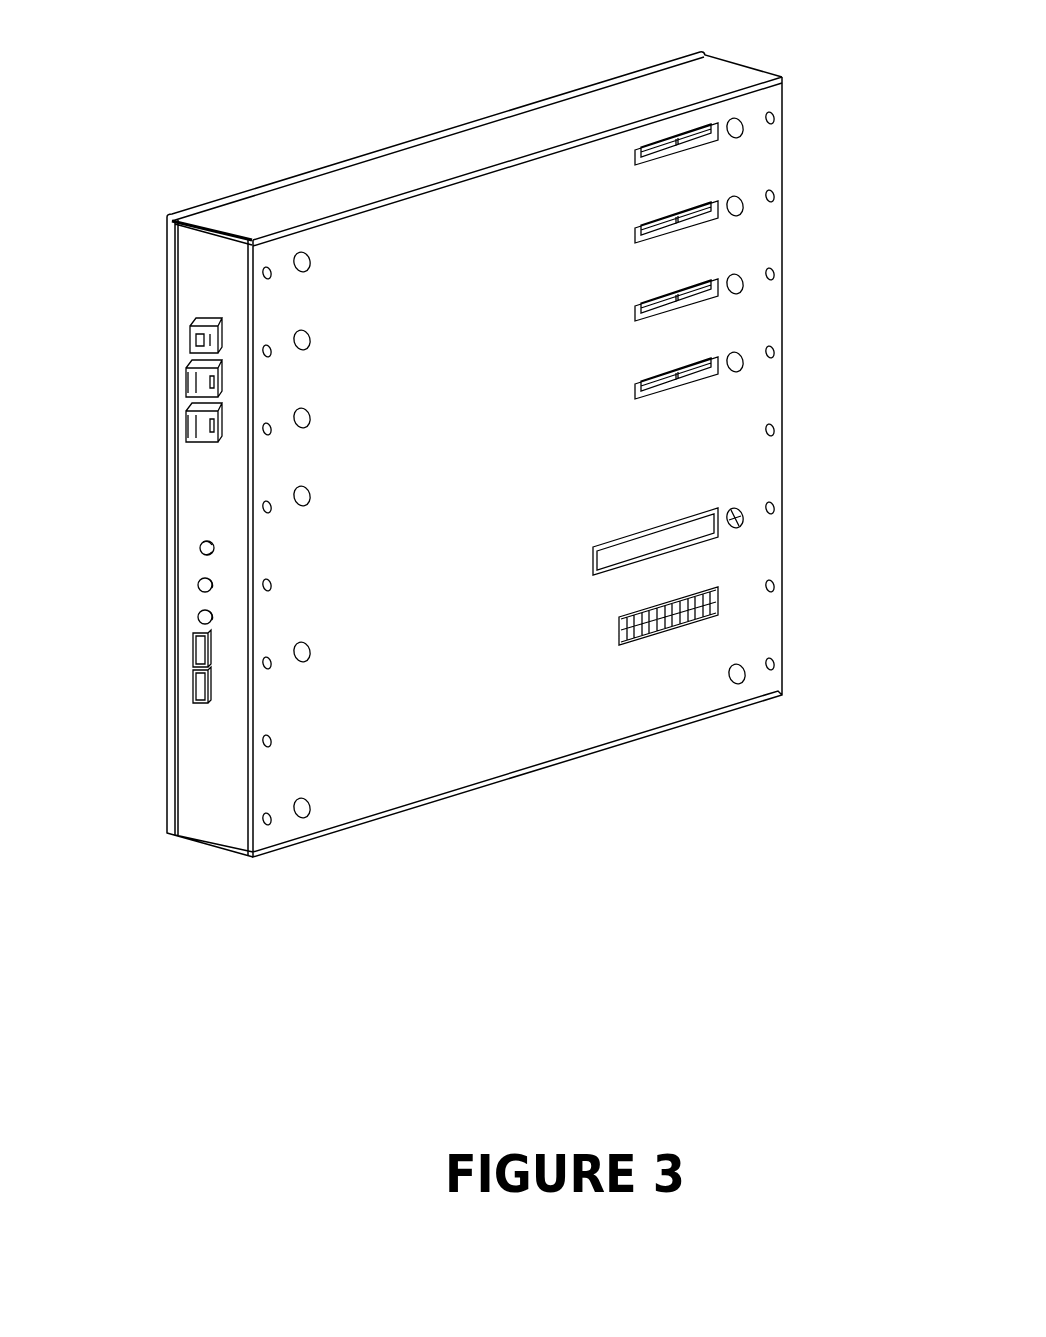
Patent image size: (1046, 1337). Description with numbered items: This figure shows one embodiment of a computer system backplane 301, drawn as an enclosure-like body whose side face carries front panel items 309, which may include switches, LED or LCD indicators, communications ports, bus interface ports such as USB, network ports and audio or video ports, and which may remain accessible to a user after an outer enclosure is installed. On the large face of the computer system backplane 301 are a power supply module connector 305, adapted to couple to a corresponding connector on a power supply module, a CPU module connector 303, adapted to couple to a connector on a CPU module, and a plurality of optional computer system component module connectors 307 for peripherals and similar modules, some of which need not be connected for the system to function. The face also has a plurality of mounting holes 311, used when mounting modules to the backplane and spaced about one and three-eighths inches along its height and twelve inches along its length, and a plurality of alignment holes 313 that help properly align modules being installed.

The computer system backplane 301 is at (712, 74).
The CPU module connector 303 is at (668, 550).
The power supply module connector 305 is at (700, 620).
The optional computer system component module connectors 307 is at (636, 158).
The front panel items 309 is at (158, 455).
The mounting holes 311 is at (782, 392).
The alignment holes 313 is at (745, 683).